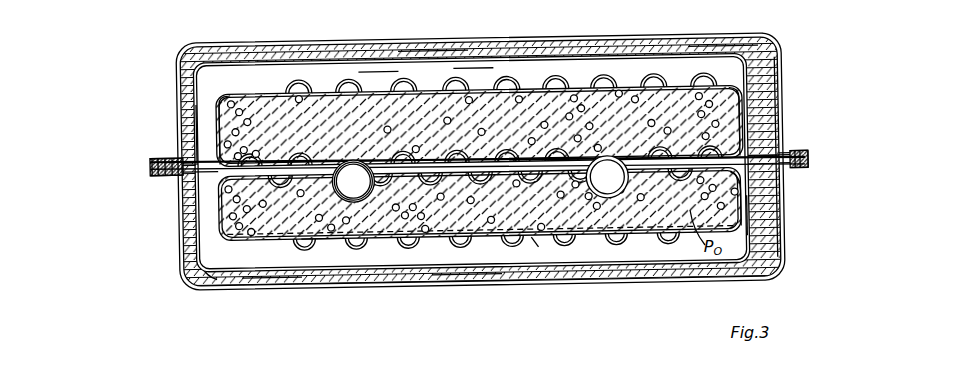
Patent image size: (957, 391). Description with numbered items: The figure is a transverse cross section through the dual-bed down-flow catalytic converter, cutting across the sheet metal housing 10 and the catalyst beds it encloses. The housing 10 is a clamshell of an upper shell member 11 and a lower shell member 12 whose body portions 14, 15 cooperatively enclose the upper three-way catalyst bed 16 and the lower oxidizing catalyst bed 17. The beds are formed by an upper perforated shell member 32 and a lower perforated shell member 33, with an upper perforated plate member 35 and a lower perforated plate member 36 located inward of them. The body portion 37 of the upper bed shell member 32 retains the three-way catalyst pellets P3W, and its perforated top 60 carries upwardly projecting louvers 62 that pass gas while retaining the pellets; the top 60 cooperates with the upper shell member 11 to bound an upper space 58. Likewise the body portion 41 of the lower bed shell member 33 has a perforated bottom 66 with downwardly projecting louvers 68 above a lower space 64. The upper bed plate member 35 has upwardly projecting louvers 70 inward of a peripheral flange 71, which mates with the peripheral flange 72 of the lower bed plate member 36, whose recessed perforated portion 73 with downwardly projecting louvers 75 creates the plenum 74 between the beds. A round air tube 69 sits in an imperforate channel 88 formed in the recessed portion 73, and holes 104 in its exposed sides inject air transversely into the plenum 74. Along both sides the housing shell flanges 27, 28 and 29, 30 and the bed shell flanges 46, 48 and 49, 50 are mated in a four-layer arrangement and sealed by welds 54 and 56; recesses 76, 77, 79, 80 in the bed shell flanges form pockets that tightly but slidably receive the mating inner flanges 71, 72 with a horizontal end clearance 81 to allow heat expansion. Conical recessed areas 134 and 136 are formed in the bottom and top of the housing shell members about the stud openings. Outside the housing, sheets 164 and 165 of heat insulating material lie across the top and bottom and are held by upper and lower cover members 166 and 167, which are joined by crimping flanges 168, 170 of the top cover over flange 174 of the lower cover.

The housing 10 is at (775, 55).
The upper shell member 11 is at (787, 70).
The lower shell member 12 is at (777, 257).
The body portion 14 is at (788, 145).
The body portion 15 is at (786, 183).
The upper catalyst bed 16 is at (748, 107).
The lower catalyst bed 17 is at (750, 220).
The flange 27 is at (805, 153).
The flange 28 is at (182, 162).
The flange 29 is at (790, 172).
The flange 30 is at (163, 172).
The upper perforated shell member 32 is at (582, 87).
The lower perforated shell member 33 is at (538, 242).
The upper perforated plate member 35 is at (542, 143).
The lower perforated plate member 36 is at (437, 183).
The body portion 37 is at (748, 125).
The body portion 41 is at (788, 197).
The flange 46 is at (810, 158).
The flange 48 is at (152, 163).
The flange 49 is at (812, 163).
The flange 50 is at (160, 172).
The weld 54 is at (150, 168).
The weld 56 is at (812, 168).
The upper space 58 is at (377, 70).
The perforated top 60 is at (332, 88).
The louvers 62 is at (557, 78).
The lower space 64 is at (307, 262).
The perforated bottom 66 is at (388, 242).
The louvers 68 is at (660, 242).
The air tube 69 is at (479, 203).
The louvers 70 is at (358, 162).
The peripheral flange 71 is at (232, 157).
The peripheral flange 72 is at (207, 172).
The perforated portion 73 is at (535, 245).
The plenum 74 is at (427, 173).
The louvers 75 is at (620, 266).
The recess 76 is at (762, 152).
The recess 77 is at (208, 158).
The recess 79 is at (725, 198).
The recess 80 is at (180, 170).
The horizontal end clearance 81 is at (205, 158).
The imperforate channel 88 is at (330, 232).
The holes 104 is at (338, 160).
The conical recessed area 134 is at (463, 262).
The conical recessed area 136 is at (472, 65).
The sheet of heat insulating material 164 is at (717, 45).
The sheet of heat insulating material 165 is at (221, 280).
The upper cover member 166 is at (433, 43).
The lower cover member 167 is at (259, 287).
The flange 168 is at (810, 175).
The flange 170 is at (150, 163).
The flange 174 is at (163, 174).
The pellets coated with three-way catalyst P3W is at (667, 90).